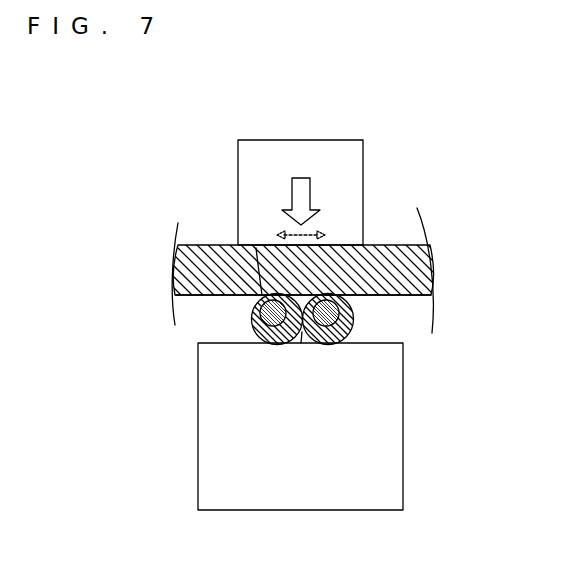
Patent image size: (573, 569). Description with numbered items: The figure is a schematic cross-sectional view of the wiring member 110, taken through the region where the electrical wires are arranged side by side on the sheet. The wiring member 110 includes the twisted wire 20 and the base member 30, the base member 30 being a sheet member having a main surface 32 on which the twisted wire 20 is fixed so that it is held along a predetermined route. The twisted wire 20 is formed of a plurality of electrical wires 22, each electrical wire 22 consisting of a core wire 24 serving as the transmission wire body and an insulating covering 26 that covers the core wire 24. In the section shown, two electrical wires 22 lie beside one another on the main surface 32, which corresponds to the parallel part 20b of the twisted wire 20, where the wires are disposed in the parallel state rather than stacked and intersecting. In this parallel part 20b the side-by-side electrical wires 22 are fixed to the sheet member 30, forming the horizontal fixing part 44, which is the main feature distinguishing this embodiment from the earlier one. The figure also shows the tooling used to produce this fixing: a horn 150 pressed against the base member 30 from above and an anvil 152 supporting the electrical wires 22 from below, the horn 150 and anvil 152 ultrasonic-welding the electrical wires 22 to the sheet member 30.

The horn 150 is at (283, 139).
The wiring member 110 is at (396, 217).
The horizontal fixing part 44 is at (256, 248).
The base member 30 is at (432, 258).
The main surface 32 is at (412, 296).
The electrical wire 22 is at (297, 349).
The twisted wire 20 is at (336, 358).
The parallel part 20b is at (325, 343).
The core wire 24 is at (268, 326).
The insulating covering 26 is at (250, 321).
The anvil 152 is at (405, 433).